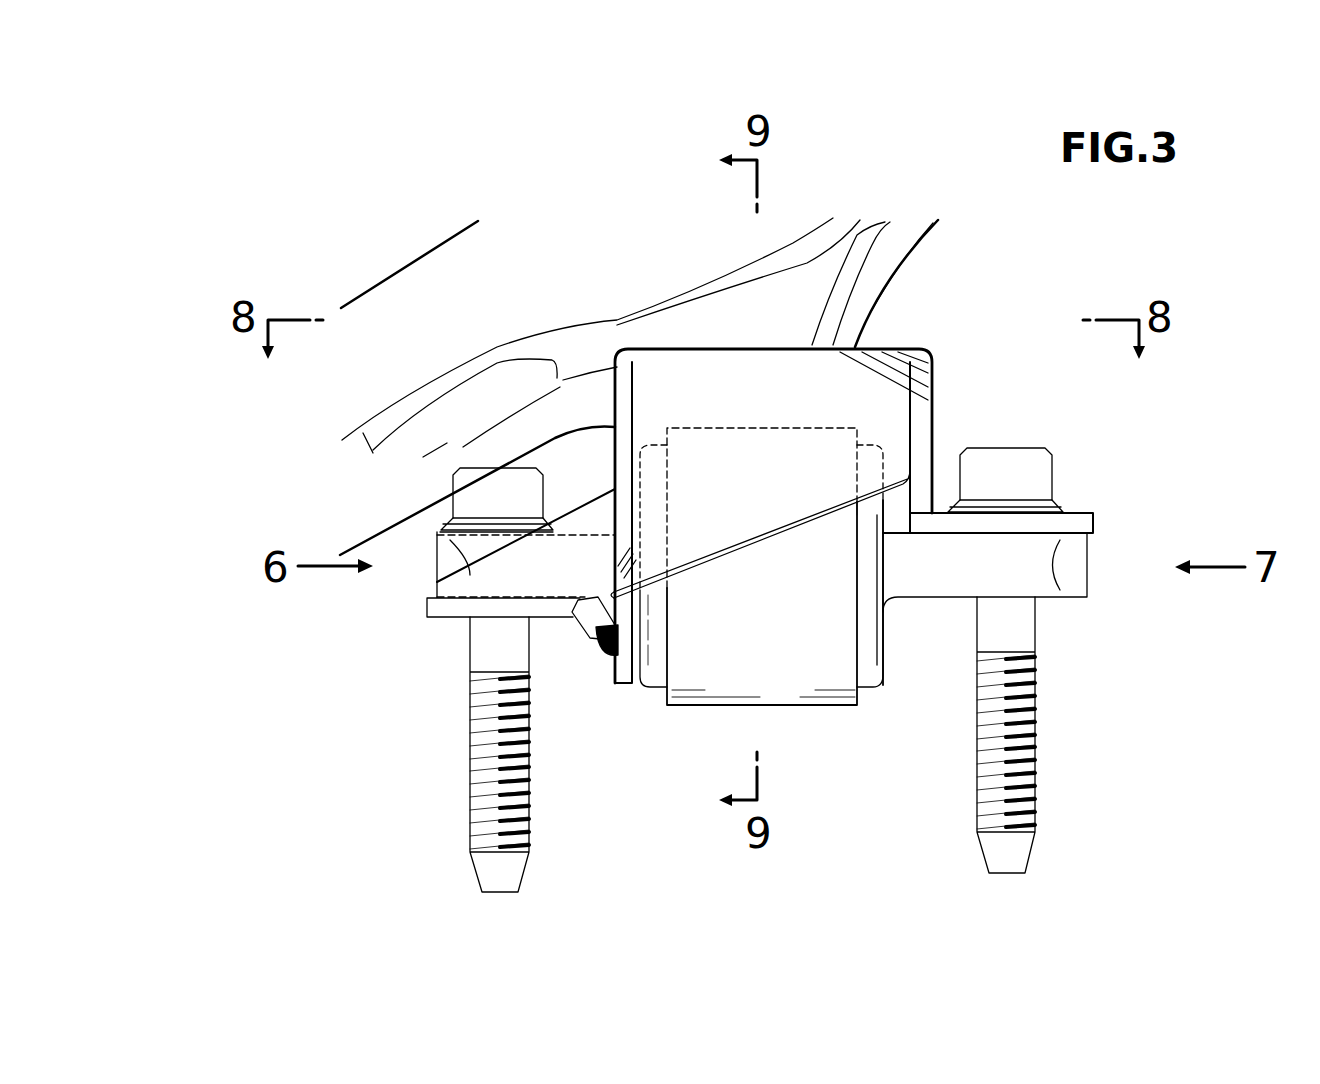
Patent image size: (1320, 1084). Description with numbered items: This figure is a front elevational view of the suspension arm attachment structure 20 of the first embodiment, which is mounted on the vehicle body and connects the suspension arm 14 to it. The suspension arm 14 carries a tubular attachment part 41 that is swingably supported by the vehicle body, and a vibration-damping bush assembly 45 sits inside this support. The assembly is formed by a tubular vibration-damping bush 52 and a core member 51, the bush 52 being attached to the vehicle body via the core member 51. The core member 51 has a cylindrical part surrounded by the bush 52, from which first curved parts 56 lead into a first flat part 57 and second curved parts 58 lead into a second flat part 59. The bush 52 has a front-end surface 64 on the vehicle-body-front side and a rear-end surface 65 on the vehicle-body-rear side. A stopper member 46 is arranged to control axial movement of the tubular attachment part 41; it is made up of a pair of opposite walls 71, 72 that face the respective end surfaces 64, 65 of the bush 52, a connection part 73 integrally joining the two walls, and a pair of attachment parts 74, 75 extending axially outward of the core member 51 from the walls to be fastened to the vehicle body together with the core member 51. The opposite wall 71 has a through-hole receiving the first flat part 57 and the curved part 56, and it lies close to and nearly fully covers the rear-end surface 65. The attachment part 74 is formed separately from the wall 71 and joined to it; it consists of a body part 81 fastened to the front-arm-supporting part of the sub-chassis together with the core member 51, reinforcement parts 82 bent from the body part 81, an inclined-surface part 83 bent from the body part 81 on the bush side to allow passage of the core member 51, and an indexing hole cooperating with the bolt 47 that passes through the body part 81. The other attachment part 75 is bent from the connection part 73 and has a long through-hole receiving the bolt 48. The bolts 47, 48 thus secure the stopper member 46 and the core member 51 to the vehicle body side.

The suspension arm attachment structure 20 is at (311, 170).
The suspension arm 14 is at (412, 290).
The connection part 73 is at (740, 372).
The stopper member 46 is at (907, 336).
The bolt 47 is at (497, 478).
The bolt 48 is at (1005, 462).
The opposite wall 72 is at (912, 468).
The attachment part 75 is at (1080, 503).
The attachment part 74 is at (455, 572).
The reinforcement part 82 is at (470, 553).
The first curved part 56 is at (620, 520).
The second curved part 58 is at (890, 510).
The opposite wall 71 is at (640, 630).
The second flat part 59 is at (1070, 553).
The front-end surface 64 is at (888, 626).
The core member 51 is at (1068, 560).
The vibration-damping bush assembly 45 is at (1195, 653).
The vibration-damping bush 52 is at (892, 654).
The tubular attachment part 41 is at (810, 685).
The first flat part 57 is at (437, 575).
The body part 81 is at (452, 610).
The inclined-surface part 83 is at (590, 620).
The rear-end surface 65 is at (632, 667).